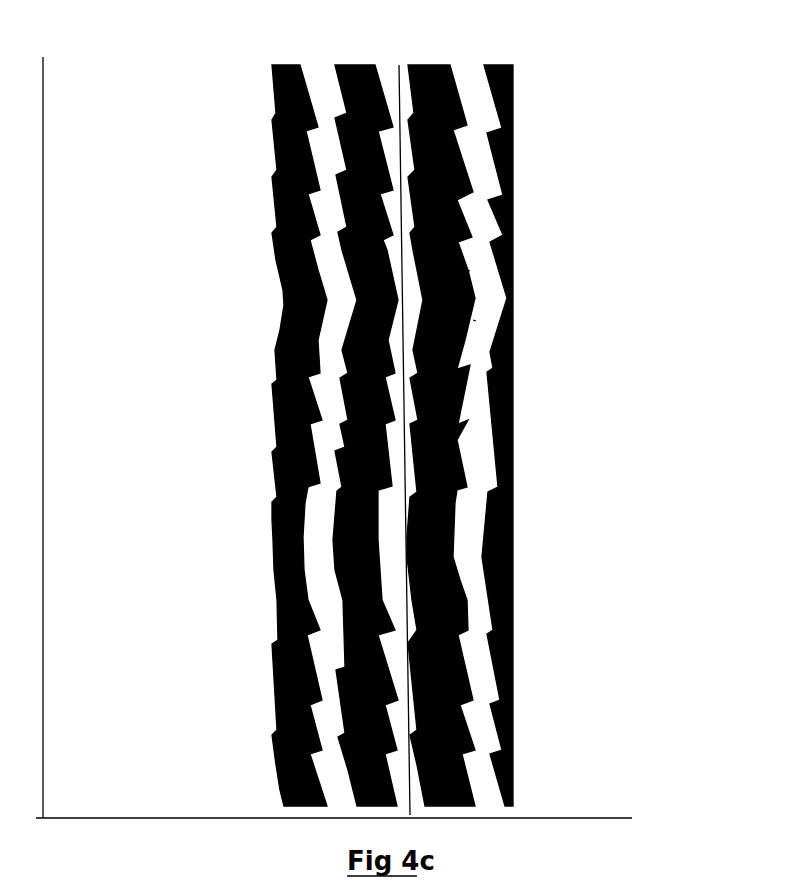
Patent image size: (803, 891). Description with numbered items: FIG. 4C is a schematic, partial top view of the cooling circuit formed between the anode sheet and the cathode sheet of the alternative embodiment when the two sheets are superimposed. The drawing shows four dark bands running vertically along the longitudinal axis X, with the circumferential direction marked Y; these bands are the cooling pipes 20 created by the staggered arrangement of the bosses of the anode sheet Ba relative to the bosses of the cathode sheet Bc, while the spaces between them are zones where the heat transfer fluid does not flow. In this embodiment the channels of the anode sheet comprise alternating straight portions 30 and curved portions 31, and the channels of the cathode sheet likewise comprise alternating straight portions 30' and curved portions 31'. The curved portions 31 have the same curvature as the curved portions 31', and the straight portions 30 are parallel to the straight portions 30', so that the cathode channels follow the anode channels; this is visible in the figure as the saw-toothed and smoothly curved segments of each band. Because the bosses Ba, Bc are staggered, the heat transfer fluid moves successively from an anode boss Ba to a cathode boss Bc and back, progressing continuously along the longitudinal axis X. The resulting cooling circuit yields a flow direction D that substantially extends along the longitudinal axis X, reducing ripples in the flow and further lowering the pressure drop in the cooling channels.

The longitudinal axis X is at (43, 120).
The Y axis (circumferential direction) Y is at (560, 818).
The flow direction D is at (465, 160).
The cooling pipes 20 is at (333, 270).
The curved portions 31 is at (523, 435).
The curved portions 31' is at (584, 593).
The straight portions 30 is at (589, 435).
The straight portions 30' is at (587, 629).
The bosses of the anode sheet Ba is at (467, 271).
The bosses of the cathode sheet Bc is at (473, 321).